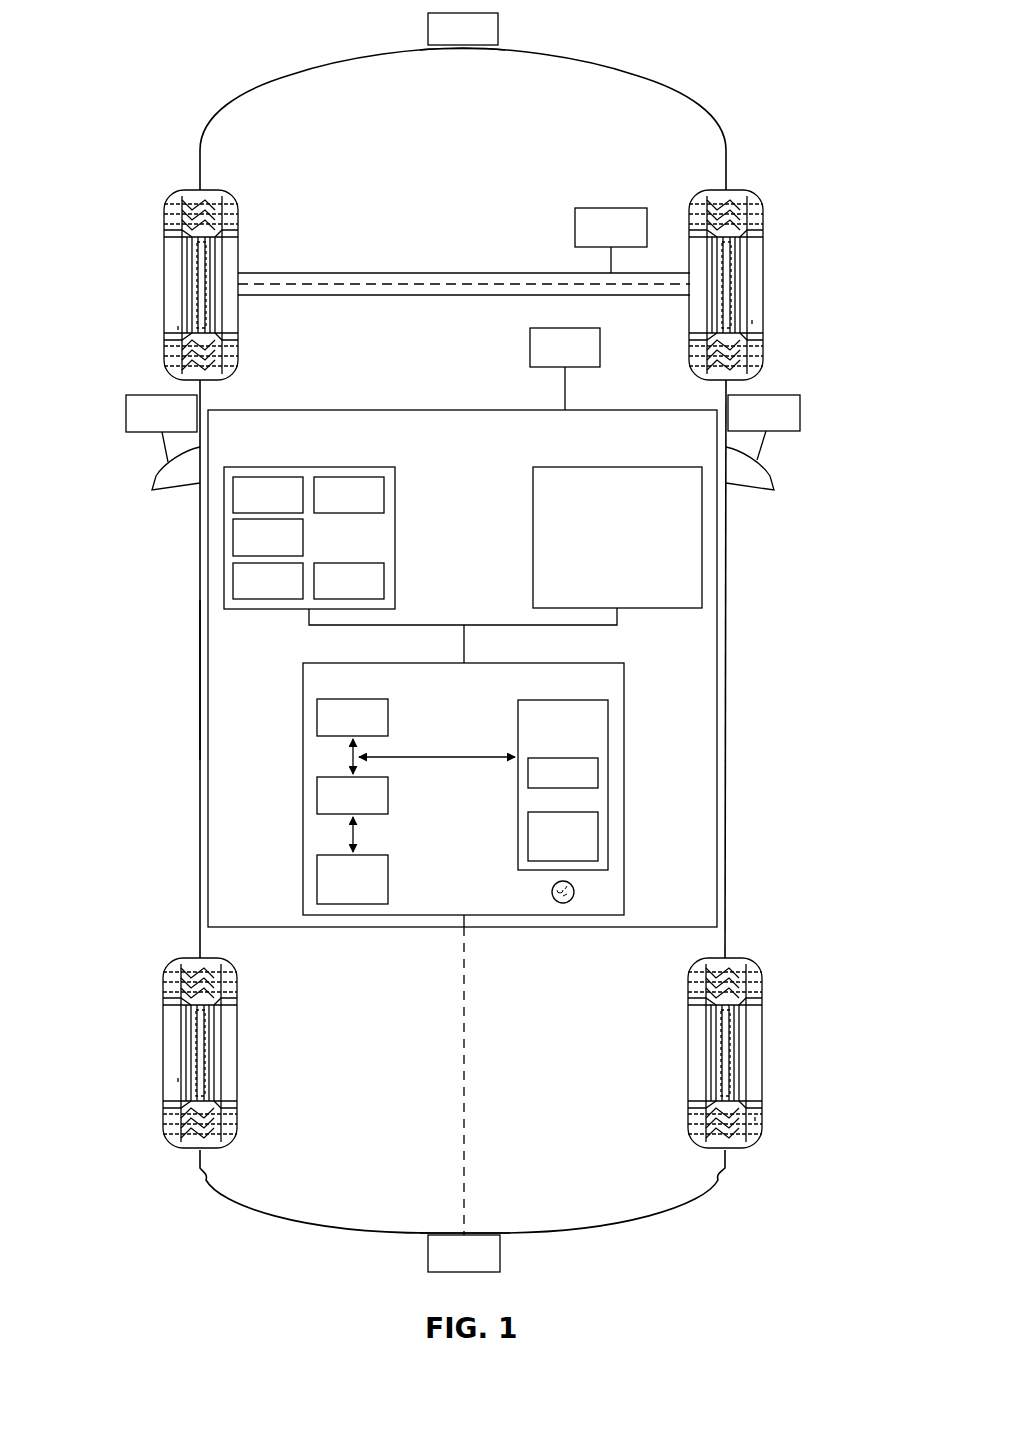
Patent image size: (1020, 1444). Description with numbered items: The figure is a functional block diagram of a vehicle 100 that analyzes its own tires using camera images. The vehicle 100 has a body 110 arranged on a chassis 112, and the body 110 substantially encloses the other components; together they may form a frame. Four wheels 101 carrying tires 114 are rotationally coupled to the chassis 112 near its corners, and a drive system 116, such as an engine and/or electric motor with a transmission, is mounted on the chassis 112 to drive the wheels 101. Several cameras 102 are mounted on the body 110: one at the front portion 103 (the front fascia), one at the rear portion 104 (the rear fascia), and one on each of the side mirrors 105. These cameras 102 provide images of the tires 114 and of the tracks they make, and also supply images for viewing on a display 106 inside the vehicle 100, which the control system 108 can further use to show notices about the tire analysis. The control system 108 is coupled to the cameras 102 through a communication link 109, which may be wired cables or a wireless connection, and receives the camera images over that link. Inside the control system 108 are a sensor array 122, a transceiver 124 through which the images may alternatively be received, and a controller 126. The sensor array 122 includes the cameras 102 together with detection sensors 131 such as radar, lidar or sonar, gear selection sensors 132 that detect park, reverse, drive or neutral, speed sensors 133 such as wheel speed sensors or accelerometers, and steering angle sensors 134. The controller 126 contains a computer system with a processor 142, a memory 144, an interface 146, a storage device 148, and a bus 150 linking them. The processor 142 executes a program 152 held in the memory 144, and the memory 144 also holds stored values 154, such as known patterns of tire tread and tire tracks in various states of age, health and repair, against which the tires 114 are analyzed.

The vehicle 100 is at (204, 102).
The wheels 101 is at (163, 268).
The cameras 102 is at (485, 42).
The front portion 103 is at (470, 46).
The rear portion 104 is at (482, 1233).
The side mirrors 105 is at (172, 481).
The display 106 is at (587, 363).
The control system 108 is at (633, 408).
The communication link 109 is at (466, 1075).
The body 110 is at (207, 678).
The chassis 112 is at (368, 272).
The tires 114 is at (178, 326).
The drive system 116 is at (633, 243).
The sensor array 122 is at (293, 465).
The transceiver 124 is at (633, 465).
The controller 126 is at (556, 662).
The detection sensors 131 is at (290, 511).
The gear selection sensors 132 is at (290, 554).
The speed sensors 133 is at (290, 597).
The steering angle sensors 134 is at (371, 511).
The processor 142 is at (317, 720).
The memory 144 is at (550, 700).
The interface 146 is at (317, 800).
The storage device 148 is at (317, 880).
The bus 150 is at (351, 762).
The program 152 is at (598, 772).
The stored values 154 is at (598, 835).